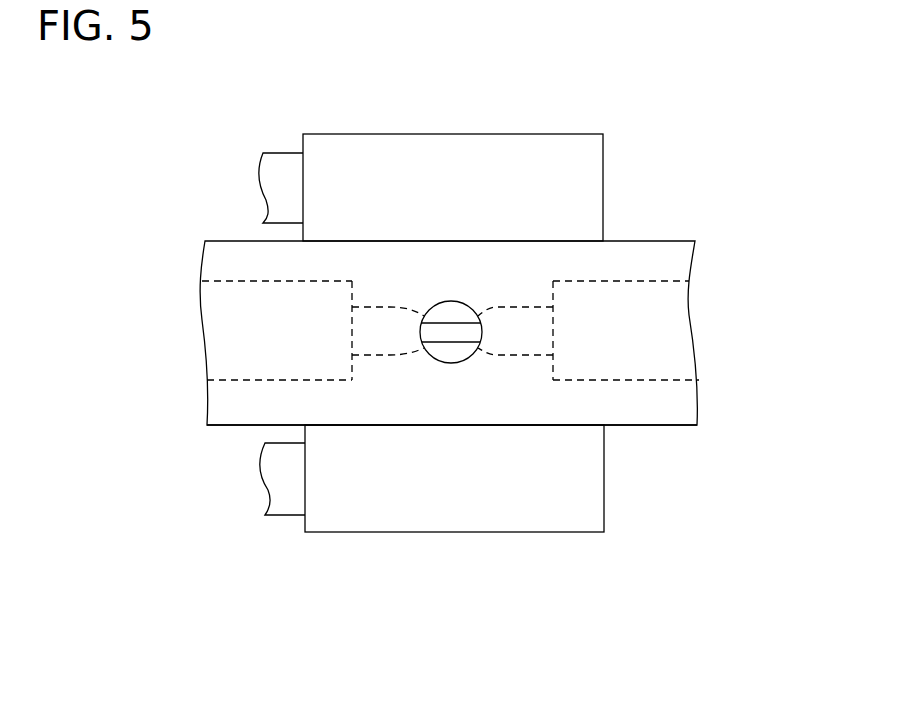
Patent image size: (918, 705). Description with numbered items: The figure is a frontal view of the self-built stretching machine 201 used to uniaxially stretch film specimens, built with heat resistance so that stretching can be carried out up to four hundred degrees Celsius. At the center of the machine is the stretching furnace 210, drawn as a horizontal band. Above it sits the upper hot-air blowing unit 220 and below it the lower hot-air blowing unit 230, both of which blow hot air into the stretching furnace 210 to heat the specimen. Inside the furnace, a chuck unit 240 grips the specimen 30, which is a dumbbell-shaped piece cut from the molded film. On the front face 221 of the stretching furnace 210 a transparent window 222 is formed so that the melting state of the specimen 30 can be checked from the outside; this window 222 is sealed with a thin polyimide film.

The stretching machine 201 is at (457, 83).
The stretching furnace 210 is at (632, 241).
The upper hot-air blowing unit 220 is at (389, 134).
The lower hot-air blowing unit 230 is at (450, 533).
The front face 221 is at (643, 412).
The transparent window 222 is at (431, 357).
The chuck unit 240 is at (252, 335).
The specimen 30 is at (455, 335).